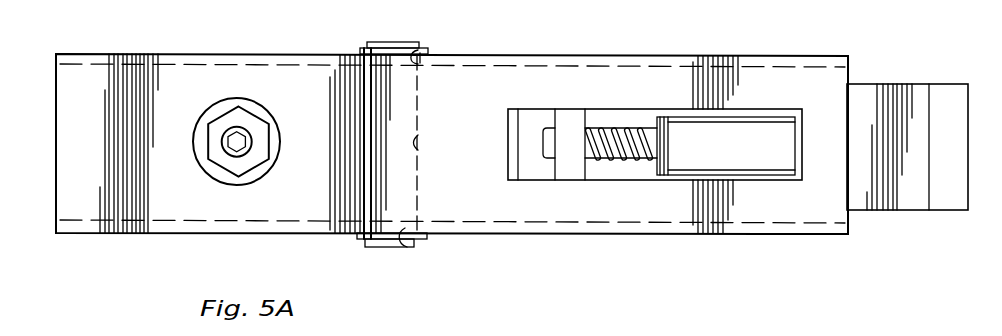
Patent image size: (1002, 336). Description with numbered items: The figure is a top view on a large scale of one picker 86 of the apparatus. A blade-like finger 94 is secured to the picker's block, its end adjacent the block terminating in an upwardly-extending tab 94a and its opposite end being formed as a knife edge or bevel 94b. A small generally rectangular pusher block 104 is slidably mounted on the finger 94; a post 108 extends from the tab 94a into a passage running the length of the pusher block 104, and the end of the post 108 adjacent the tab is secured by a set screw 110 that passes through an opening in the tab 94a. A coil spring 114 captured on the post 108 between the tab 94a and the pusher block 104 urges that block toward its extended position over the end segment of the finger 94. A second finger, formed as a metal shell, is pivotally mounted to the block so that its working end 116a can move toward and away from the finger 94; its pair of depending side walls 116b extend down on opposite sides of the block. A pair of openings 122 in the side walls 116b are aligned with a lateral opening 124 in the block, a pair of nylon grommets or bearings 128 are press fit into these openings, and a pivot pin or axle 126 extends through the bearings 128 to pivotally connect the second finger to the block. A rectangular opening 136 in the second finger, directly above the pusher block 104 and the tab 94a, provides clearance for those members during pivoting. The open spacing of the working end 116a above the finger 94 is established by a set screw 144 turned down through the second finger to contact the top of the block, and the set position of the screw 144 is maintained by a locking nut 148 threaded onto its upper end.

The picker 86 is at (196, 250).
The set screw 144 is at (222, 129).
The locking nut 148 is at (233, 118).
The nylon grommets or bearings 128 is at (362, 48).
The pivot pin or axle 126 is at (385, 42).
The openings 122 is at (411, 40).
The lateral opening 124 is at (420, 147).
The rectangular opening 136 is at (537, 177).
The set screw 110 is at (538, 127).
The tab 94a is at (570, 112).
The coil spring 114 is at (630, 126).
The post 108 is at (647, 162).
The pusher block 104 is at (728, 165).
The side walls 116b is at (772, 67).
The working end 116a is at (850, 63).
The finger 94 is at (891, 211).
The knife edge or bevel 94b is at (950, 204).